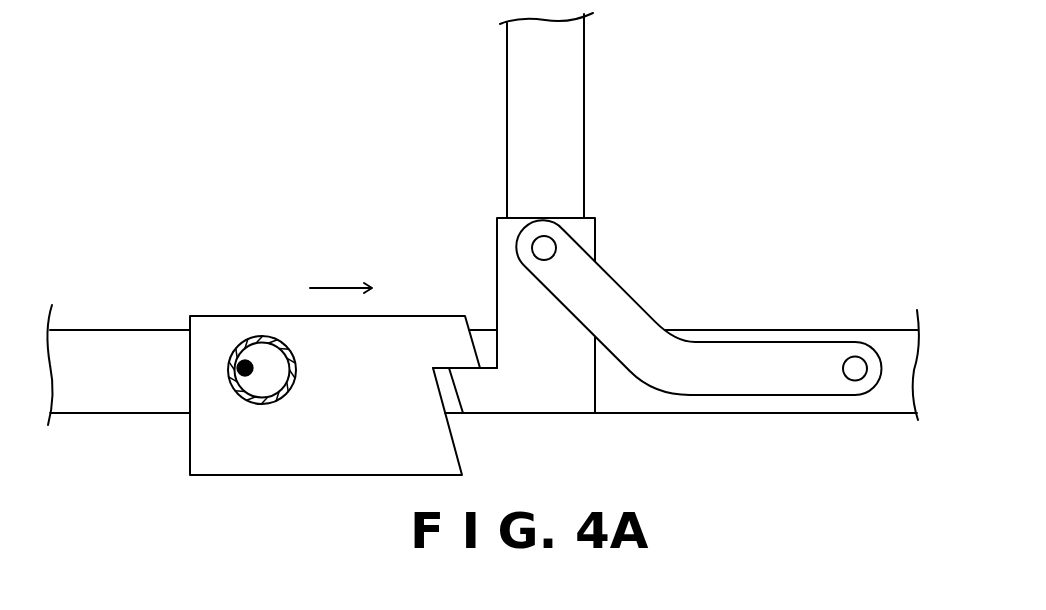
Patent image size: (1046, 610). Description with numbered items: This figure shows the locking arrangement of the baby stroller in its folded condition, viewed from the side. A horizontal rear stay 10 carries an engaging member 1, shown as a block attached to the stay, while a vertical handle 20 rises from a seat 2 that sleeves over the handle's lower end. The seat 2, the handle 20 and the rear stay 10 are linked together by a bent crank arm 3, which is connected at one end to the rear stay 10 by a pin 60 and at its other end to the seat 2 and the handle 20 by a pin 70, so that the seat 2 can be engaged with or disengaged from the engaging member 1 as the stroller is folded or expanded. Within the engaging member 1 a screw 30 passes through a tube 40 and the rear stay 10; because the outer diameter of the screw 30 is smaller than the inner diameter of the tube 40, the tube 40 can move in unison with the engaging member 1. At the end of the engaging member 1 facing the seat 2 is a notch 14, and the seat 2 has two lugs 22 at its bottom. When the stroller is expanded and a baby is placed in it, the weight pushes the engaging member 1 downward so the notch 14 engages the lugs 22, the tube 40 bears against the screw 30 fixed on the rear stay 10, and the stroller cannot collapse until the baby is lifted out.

The engaging member 1 is at (272, 480).
The seat 2 is at (602, 242).
The crank arm 3 is at (650, 338).
The rear stay 10 is at (672, 410).
The notch 14 is at (446, 390).
The handle 20 is at (575, 132).
The lugs 22 is at (478, 397).
The screw 30 is at (243, 362).
The tube 40 is at (277, 340).
The pin 60 is at (854, 357).
The pin 70 is at (532, 245).